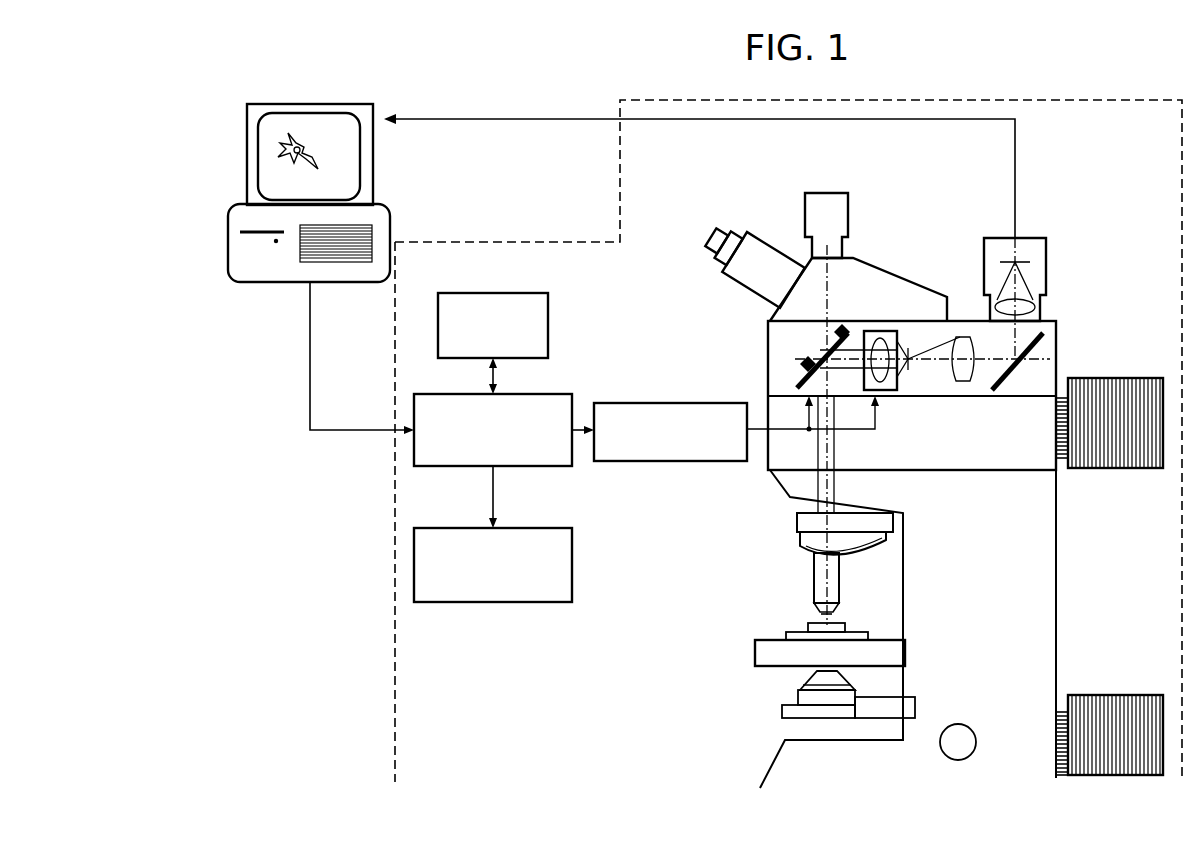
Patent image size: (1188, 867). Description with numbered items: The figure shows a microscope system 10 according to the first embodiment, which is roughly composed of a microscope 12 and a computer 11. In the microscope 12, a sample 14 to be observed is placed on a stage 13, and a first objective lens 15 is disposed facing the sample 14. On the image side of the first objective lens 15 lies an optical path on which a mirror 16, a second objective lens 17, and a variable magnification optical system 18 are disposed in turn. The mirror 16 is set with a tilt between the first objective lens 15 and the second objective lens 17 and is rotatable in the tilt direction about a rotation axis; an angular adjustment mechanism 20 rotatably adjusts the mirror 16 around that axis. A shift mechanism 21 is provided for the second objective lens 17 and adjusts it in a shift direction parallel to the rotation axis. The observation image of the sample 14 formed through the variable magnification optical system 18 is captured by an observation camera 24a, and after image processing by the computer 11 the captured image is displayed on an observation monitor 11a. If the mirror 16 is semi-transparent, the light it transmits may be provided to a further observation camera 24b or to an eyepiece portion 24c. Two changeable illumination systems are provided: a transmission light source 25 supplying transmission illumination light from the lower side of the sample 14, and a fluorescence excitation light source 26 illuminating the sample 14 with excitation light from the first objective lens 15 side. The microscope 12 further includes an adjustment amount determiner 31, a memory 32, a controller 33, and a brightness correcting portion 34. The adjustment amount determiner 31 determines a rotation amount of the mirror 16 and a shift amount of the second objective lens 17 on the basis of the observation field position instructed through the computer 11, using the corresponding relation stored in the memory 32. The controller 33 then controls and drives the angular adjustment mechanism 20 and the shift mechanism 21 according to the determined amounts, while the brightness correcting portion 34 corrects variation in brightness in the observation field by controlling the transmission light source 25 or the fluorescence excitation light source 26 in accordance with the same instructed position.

The microscope system 10 is at (328, 634).
The computer 11 is at (390, 210).
The observation monitor 11a is at (373, 140).
The microscope 12 is at (664, 734).
The stage 13 is at (755, 654).
The sample 14 is at (812, 624).
The first objective lens 15 is at (818, 580).
The mirror 16 is at (808, 358).
The second objective lens 17 is at (880, 342).
The variable magnification optical system 18 is at (965, 382).
The angular adjustment mechanism 20 is at (796, 372).
The shift mechanism 21 is at (897, 375).
The observation camera 24a is at (1046, 272).
The observation camera 24b is at (826, 198).
The eyepiece portion 24c is at (730, 240).
The transmission light source 25 is at (1136, 695).
The fluorescence excitation light source 26 is at (1120, 470).
The adjustment amount determiner 31 is at (548, 466).
The memory 32 is at (530, 293).
The controller 33 is at (702, 461).
The brightness correcting portion 34 is at (548, 602).